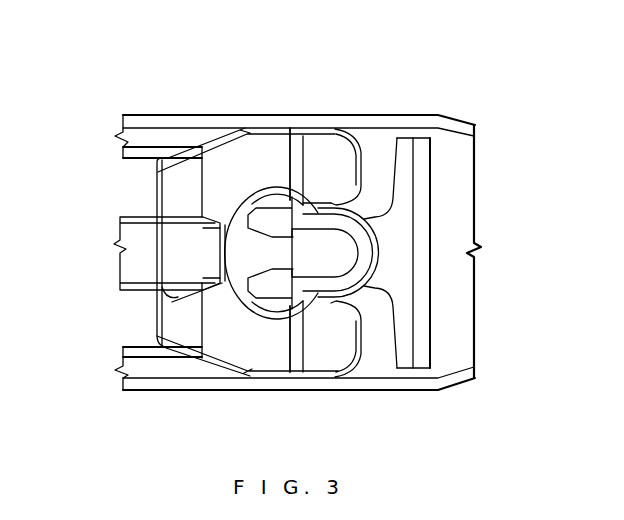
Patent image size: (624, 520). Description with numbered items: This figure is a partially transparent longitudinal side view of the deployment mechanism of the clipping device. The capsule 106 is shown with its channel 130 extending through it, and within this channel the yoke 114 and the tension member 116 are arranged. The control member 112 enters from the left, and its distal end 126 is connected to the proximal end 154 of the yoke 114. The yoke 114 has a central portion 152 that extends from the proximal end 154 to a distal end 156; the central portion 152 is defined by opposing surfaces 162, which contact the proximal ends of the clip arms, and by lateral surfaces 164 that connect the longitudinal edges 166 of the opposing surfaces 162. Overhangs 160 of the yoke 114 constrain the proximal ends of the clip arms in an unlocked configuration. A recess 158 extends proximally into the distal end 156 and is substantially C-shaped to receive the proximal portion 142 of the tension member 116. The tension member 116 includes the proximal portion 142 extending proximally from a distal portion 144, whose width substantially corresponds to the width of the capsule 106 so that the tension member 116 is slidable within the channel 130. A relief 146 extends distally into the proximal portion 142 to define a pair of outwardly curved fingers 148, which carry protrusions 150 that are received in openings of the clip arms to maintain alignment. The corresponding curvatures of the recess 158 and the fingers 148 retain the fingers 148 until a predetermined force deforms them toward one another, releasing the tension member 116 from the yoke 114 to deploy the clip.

The capsule 106 is at (387, 117).
The control member 112 is at (118, 230).
The yoke 114 is at (208, 177).
The tension member 116 is at (420, 303).
The distal end 126 is at (158, 290).
The channel 130 is at (455, 180).
The proximal portion 142 is at (280, 198).
The distal portion 144 is at (420, 162).
The relief 146 is at (247, 240).
The fingers 148 is at (278, 295).
The protrusions 150 is at (336, 228).
The central portion 152 is at (184, 158).
The proximal end 154 is at (164, 195).
The distal end 156 is at (356, 318).
The recess 158 is at (239, 202).
The overhangs 160 is at (222, 283).
The opposing surfaces 162 is at (195, 265).
The lateral surfaces 164 is at (323, 132).
The longitudinal edges 166 is at (291, 128).